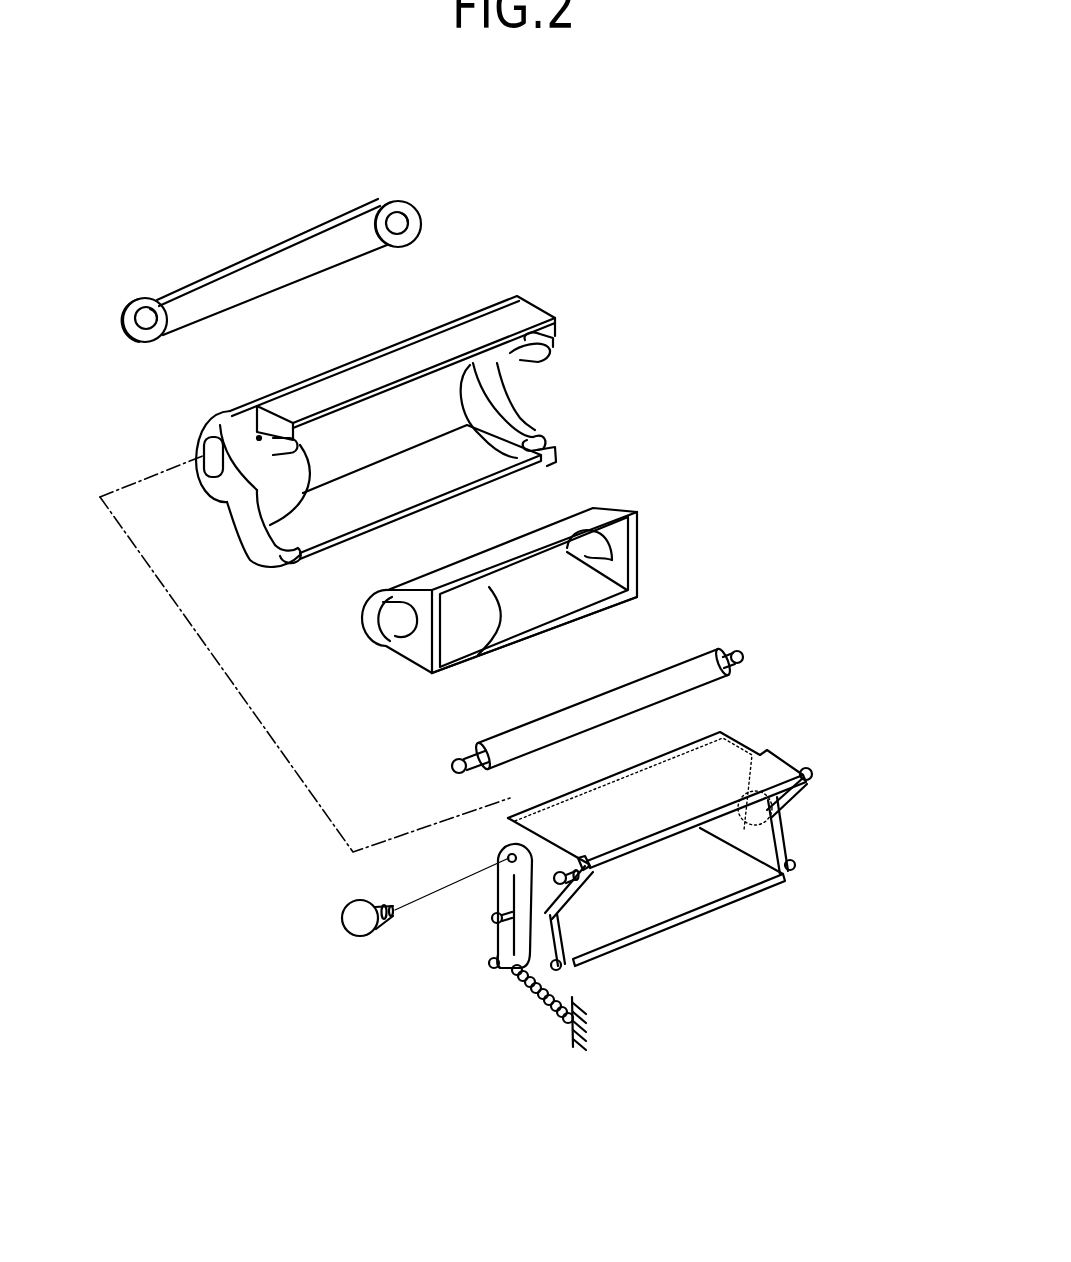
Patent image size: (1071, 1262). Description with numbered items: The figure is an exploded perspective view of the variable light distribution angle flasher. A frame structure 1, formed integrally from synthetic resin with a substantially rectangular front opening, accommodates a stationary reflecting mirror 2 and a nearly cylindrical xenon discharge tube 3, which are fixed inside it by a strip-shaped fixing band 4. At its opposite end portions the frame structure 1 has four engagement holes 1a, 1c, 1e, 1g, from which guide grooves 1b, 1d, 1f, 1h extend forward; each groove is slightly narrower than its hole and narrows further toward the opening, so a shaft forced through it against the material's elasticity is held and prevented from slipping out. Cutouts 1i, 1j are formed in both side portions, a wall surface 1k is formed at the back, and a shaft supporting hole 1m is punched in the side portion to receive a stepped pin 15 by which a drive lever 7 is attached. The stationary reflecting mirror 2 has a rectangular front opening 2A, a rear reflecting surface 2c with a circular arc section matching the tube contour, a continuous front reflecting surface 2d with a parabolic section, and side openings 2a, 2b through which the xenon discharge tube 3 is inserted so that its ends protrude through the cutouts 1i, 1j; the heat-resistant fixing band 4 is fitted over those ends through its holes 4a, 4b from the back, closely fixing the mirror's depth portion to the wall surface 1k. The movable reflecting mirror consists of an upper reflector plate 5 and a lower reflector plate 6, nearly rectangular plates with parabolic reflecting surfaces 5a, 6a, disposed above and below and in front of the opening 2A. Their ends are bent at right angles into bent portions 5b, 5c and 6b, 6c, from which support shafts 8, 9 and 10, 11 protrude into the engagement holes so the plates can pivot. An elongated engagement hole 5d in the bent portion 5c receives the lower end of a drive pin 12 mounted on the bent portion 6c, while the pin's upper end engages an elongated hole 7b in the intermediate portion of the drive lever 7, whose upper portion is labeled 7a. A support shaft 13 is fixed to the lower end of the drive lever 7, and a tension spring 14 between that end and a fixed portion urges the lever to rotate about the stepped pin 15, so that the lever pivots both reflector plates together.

The frame structure 1 is at (537, 299).
The engagement hole 1a is at (541, 346).
The guide groove 1b is at (551, 352).
The engagement hole 1c is at (233, 498).
The guide groove 1d is at (281, 522).
The engagement hole 1e is at (527, 432).
The guide groove 1f is at (550, 449).
The engagement hole 1g is at (252, 564).
The guide groove 1h is at (297, 557).
The cutout 1i is at (510, 390).
The cutout 1j is at (186, 469).
The wall surface 1k is at (369, 355).
The shaft supporting hole 1m is at (224, 408).
The stationary reflecting mirror 2 is at (637, 522).
The opening 2a is at (614, 545).
The opening 2b is at (380, 620).
The opening 2A is at (585, 613).
The reflecting surface 2c is at (478, 655).
The reflecting surface 2d is at (535, 606).
The xenon discharge tube 3 is at (718, 652).
The fixing band 4 is at (262, 254).
The hole 4a is at (392, 222).
The hole 4b is at (160, 303).
The upper reflector plate 5 is at (741, 738).
The parabolic reflecting surface 5a is at (663, 836).
The bent portion 5b is at (786, 803).
The bent portion 5c is at (558, 862).
The elongated engagement hole 5d is at (548, 912).
The lower reflector plate 6 is at (760, 897).
The parabolic reflecting surface 6a is at (688, 899).
The bent portion 6b is at (783, 831).
The bent portion 6c is at (593, 954).
The drive lever 7 is at (497, 941).
The lever pivot hole 7a is at (508, 860).
The elongated hole 7b is at (520, 968).
The support shaft 8 is at (812, 770).
The support shaft 9 is at (568, 885).
The support shaft 10 is at (796, 864).
The support shaft 11 is at (553, 976).
The drive pin 12 is at (497, 916).
The support shaft 13 is at (490, 968).
The tension spring 14 is at (562, 1024).
The stepped pin 15 is at (345, 928).